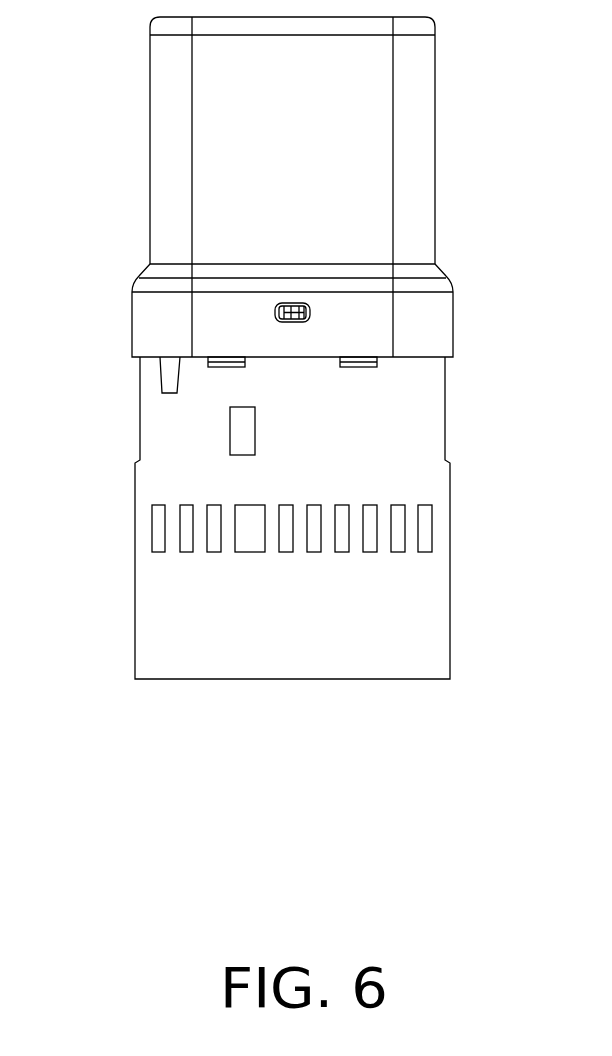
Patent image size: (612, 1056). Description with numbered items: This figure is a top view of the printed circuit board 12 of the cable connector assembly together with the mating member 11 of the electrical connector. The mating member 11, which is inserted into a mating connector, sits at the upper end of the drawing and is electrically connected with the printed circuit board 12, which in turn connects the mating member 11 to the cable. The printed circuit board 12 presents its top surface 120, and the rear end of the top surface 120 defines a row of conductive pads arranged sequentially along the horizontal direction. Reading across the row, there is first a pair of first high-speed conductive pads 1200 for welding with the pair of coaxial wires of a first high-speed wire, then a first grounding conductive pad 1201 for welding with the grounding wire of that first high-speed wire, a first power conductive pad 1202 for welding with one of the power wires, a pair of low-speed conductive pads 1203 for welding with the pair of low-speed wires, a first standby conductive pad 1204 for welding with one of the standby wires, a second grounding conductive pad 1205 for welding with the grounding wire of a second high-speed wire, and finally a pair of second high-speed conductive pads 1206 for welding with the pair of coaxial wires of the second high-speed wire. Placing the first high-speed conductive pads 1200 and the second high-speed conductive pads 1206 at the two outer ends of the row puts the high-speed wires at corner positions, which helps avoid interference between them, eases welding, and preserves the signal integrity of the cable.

The mating member 11 is at (415, 112).
The printed circuit board 12 is at (420, 410).
The top surface 120 is at (418, 636).
The first high-speed conductive pads 1200 is at (187, 542).
The first grounding conductive pad 1201 is at (213, 543).
The first power conductive pad 1202 is at (250, 542).
The low-speed conductive pads 1203 is at (315, 542).
The first standby conductive pad 1204 is at (343, 543).
The second grounding conductive pad 1205 is at (368, 542).
The second high-speed conductive pads 1206 is at (398, 522).